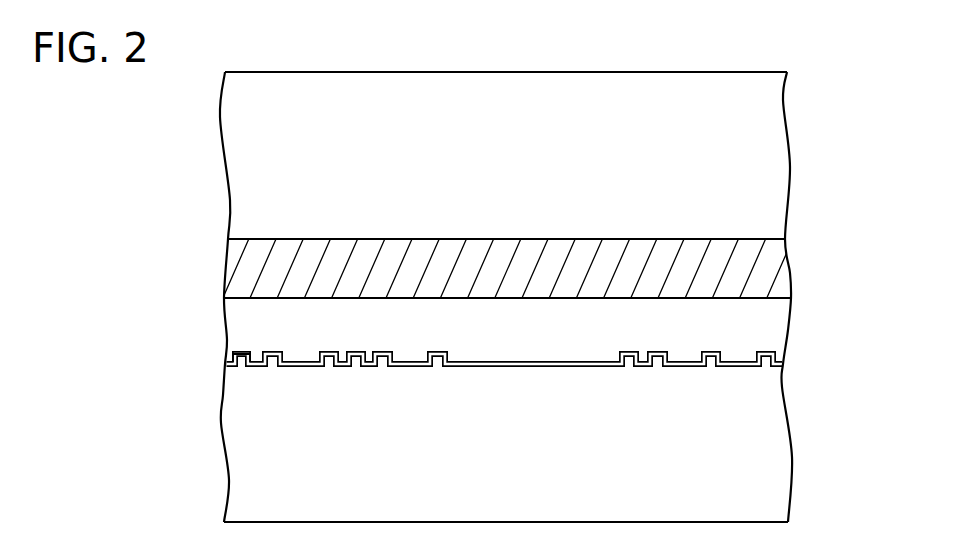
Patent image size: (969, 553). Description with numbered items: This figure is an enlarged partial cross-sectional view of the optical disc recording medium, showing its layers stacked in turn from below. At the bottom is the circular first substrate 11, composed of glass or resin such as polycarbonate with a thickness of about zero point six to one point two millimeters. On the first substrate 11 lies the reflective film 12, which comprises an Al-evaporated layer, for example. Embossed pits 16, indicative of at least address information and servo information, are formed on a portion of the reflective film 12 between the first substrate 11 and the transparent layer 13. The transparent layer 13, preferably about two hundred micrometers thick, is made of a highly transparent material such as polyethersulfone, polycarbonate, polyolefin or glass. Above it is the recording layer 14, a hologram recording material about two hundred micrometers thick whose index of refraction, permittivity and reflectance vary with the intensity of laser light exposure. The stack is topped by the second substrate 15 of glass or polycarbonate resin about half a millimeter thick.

The first substrate 11 is at (777, 459).
The reflective film 12 is at (781, 363).
The transparent layer 13 is at (777, 325).
The recording layer 14 is at (777, 267).
The second substrate 15 is at (777, 173).
The embossed pits 16 is at (243, 352).